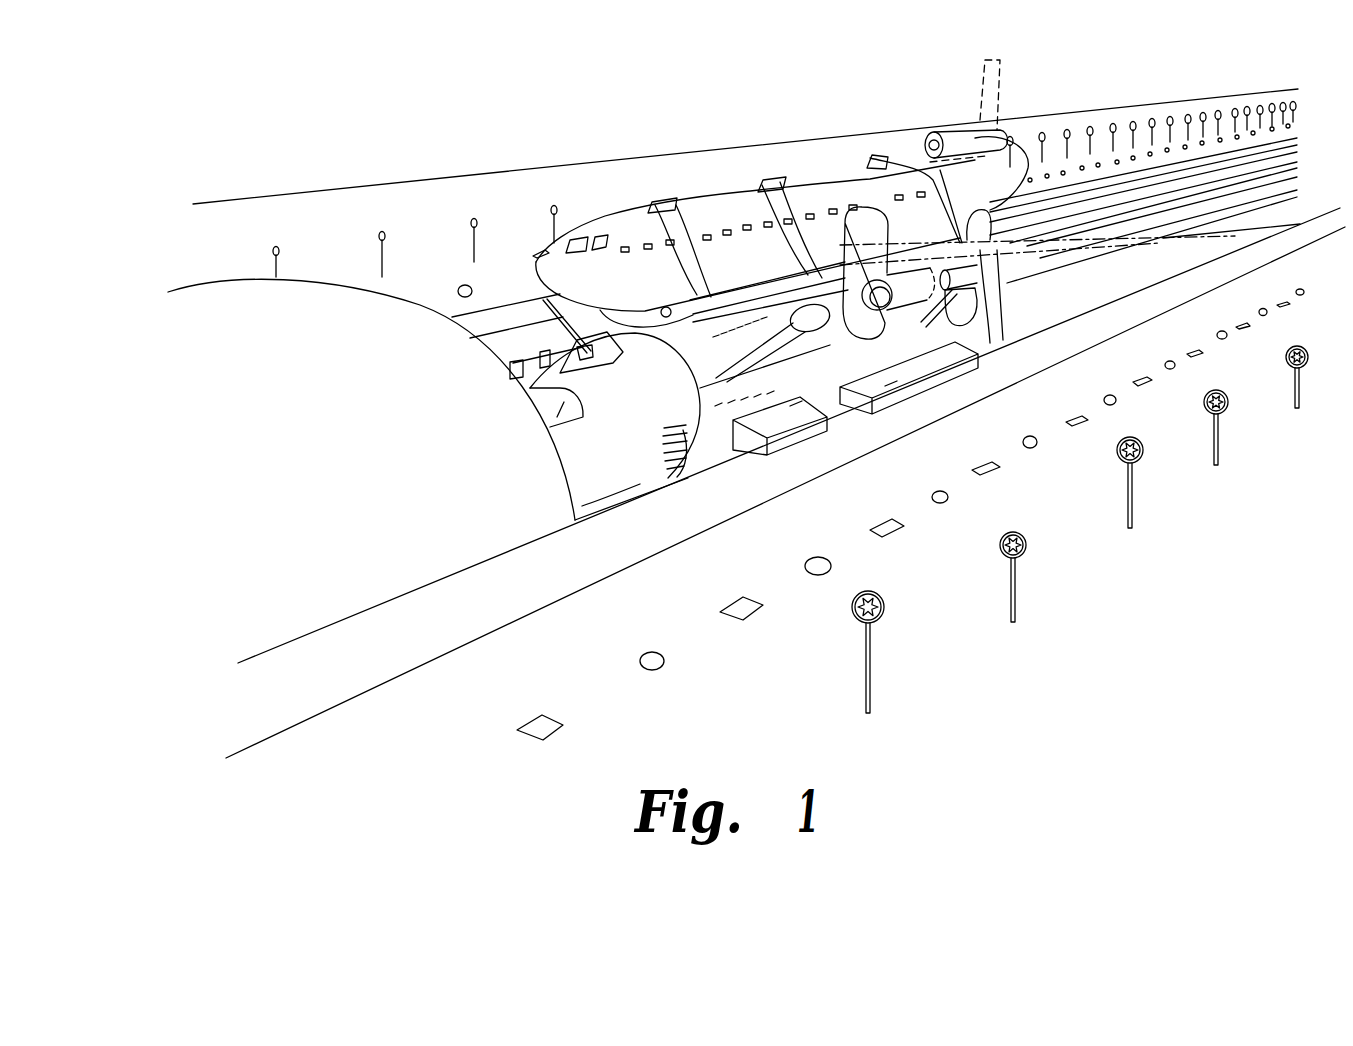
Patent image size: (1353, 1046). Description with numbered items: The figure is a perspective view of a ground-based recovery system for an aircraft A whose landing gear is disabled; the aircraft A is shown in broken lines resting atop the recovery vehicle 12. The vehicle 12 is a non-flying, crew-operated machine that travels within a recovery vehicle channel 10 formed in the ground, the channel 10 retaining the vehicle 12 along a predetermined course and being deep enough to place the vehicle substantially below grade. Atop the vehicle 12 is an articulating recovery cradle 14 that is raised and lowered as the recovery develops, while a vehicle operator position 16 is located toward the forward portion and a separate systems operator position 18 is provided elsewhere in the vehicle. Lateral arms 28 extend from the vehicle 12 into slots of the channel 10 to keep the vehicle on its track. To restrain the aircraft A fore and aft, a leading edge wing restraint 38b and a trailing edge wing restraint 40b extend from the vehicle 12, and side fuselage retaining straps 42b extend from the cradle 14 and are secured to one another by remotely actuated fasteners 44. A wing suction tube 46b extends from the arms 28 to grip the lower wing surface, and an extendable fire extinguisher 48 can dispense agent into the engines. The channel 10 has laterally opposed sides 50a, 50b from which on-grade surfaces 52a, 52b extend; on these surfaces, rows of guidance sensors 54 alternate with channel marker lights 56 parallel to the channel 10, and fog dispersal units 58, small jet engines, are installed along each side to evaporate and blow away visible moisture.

The recovery vehicle channel 10 is at (1148, 280).
The recovery vehicle 12 is at (789, 380).
The articulating recovery cradle 14 is at (705, 213).
The vehicle operator position 16 is at (550, 410).
The systems operator position 18 is at (603, 355).
The lateral arm 28 is at (868, 392).
The second leading edge wing restraint 38b is at (858, 208).
The second trailing edge wing restraint 40b is at (1015, 200).
The second side fuselage retaining strap 42b is at (776, 188).
The remotely actuated clasp or fastener 44 is at (658, 203).
The second wing suction tube 46b is at (987, 332).
The fire extinguisher 48 is at (810, 318).
The first side of channel 50a is at (507, 314).
The second side of channel 50b is at (752, 446).
The first surface 52a is at (296, 254).
The second surface 52b is at (755, 703).
The guidance sensor 54 is at (540, 258).
The channel marker light 56 is at (462, 284).
The fog dispersal unit 58 is at (1000, 562).
The aircraft A is at (598, 225).